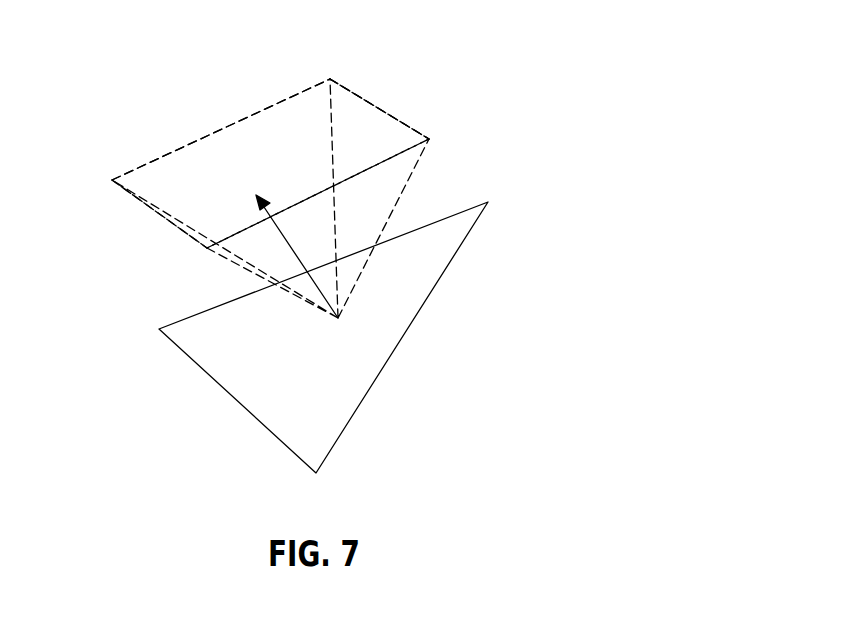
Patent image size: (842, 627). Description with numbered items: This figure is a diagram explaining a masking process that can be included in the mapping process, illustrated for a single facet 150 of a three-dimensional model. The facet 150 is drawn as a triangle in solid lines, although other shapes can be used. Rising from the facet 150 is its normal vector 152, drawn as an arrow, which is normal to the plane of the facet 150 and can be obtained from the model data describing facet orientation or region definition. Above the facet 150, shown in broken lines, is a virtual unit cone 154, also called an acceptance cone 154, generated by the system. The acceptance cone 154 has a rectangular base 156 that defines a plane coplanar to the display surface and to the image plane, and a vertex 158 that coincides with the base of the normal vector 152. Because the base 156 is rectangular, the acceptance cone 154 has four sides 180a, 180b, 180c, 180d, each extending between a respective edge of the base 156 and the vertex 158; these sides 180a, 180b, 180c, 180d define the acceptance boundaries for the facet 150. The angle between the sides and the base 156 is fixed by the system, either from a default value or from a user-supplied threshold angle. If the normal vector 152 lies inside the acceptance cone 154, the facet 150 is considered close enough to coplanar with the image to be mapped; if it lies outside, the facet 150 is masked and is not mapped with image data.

The facet 150 is at (183, 317).
The normal vector 152 is at (262, 195).
The virtual unit cone 154 is at (174, 111).
The base 156 is at (395, 118).
The vertex 158 is at (338, 318).
The side 180a is at (152, 220).
The side 180b is at (382, 168).
The side 180c is at (368, 88).
The side 180d is at (278, 93).